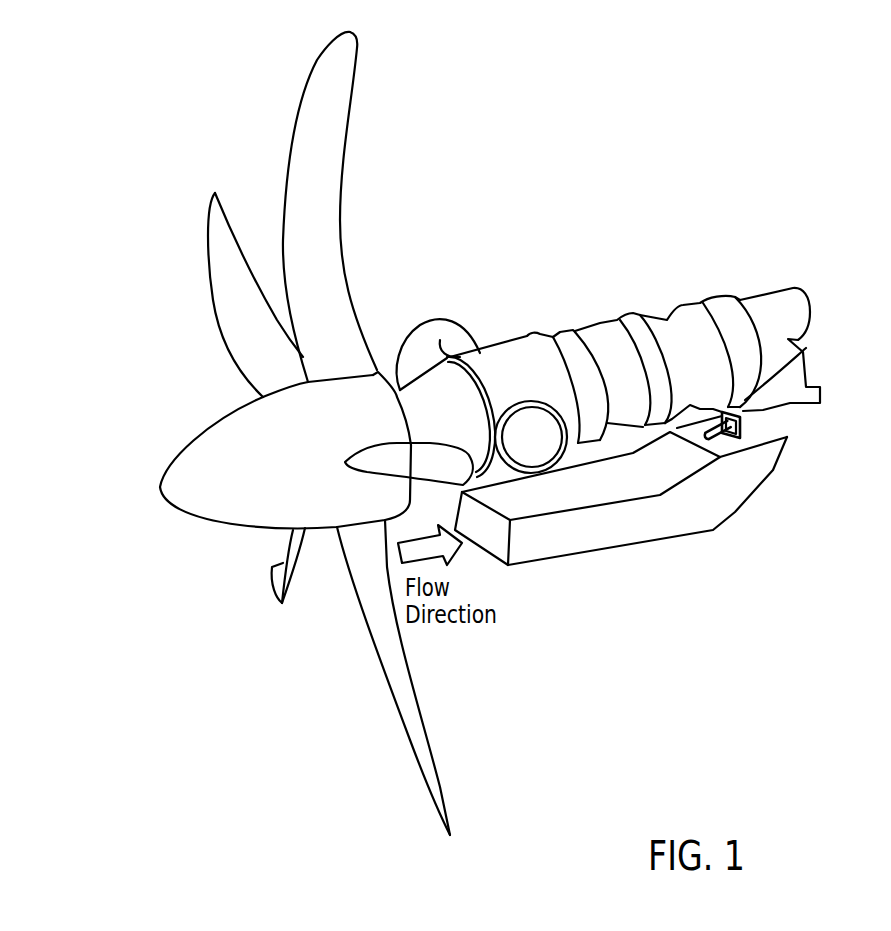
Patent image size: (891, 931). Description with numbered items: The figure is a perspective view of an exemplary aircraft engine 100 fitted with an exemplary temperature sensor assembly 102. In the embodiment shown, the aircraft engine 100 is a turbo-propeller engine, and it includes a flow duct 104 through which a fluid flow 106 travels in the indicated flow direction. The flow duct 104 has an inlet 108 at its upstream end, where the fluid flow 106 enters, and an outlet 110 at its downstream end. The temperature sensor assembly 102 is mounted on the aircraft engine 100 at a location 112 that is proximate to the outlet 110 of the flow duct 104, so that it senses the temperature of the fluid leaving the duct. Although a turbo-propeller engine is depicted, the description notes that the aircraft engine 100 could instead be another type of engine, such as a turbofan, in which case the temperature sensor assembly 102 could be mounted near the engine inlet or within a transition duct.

The aircraft engine 100 is at (667, 143).
The temperature sensor assembly 102 is at (754, 418).
The flow duct 104 is at (597, 552).
The fluid flow 106 is at (390, 560).
The inlet 108 is at (500, 538).
The outlet 110 is at (768, 438).
The location 112 is at (746, 419).